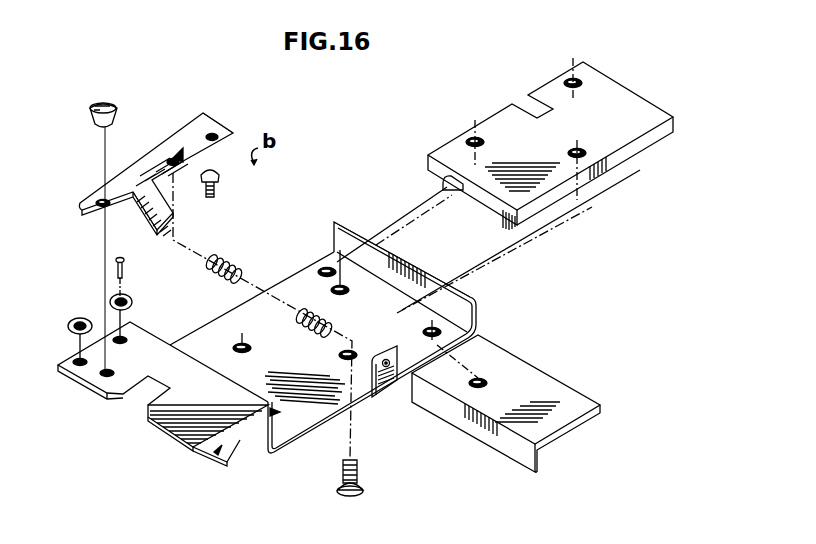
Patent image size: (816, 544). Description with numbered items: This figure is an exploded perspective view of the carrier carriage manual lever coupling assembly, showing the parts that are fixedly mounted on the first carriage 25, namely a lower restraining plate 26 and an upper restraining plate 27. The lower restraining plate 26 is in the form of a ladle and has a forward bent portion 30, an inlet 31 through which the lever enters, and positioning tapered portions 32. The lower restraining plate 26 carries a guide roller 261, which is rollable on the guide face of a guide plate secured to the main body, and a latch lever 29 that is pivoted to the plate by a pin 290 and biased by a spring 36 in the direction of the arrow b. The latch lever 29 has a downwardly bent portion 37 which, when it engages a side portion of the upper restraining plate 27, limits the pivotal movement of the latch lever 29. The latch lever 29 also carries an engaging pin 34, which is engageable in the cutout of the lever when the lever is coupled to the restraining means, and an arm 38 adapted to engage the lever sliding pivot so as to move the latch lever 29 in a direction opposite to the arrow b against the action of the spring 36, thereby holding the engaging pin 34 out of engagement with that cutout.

The first carriage 25 is at (550, 385).
The lower restraining plate 26 is at (293, 422).
The upper restraining plate 27 is at (657, 138).
The latch lever 29 is at (152, 167).
The forward bent portion 30 is at (462, 290).
The inlet 31 is at (217, 448).
The positioning tapered portions 32 is at (110, 395).
The engaging pin 34 is at (203, 190).
The spring 36 is at (239, 272).
The downwardly bent portion 37 is at (200, 125).
The arm 38 is at (133, 203).
The guide roller 261 is at (110, 302).
The pin 290 is at (95, 103).